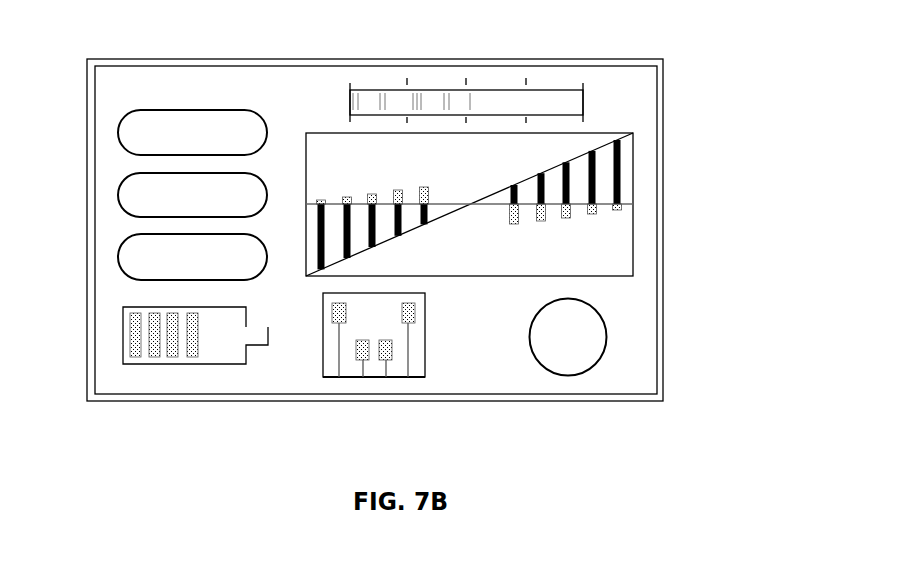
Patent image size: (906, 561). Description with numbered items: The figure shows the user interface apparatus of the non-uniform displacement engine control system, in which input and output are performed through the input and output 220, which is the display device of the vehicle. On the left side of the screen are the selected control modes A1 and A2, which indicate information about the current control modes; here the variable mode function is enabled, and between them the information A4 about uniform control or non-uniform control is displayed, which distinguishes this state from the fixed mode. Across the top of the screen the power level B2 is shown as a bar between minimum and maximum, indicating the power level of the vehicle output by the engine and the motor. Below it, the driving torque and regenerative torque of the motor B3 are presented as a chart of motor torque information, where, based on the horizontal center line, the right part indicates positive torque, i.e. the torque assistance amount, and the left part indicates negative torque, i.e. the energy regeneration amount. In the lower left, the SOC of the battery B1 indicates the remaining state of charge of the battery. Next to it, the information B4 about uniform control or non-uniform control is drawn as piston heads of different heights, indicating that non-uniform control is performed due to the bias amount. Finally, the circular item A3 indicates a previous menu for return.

The input and output 220 is at (669, 73).
The selected control mode A1 is at (118, 128).
The information about uniform control or non-uniform control A4 is at (118, 190).
The selected control mode A2 is at (118, 253).
The previous menu A3 is at (566, 366).
The SOC of the battery B1 is at (214, 364).
The power level B2 is at (543, 90).
The driving torque and regenerative torque of the motor B3 is at (633, 187).
The information about uniform control or non-uniform control B4 is at (372, 377).